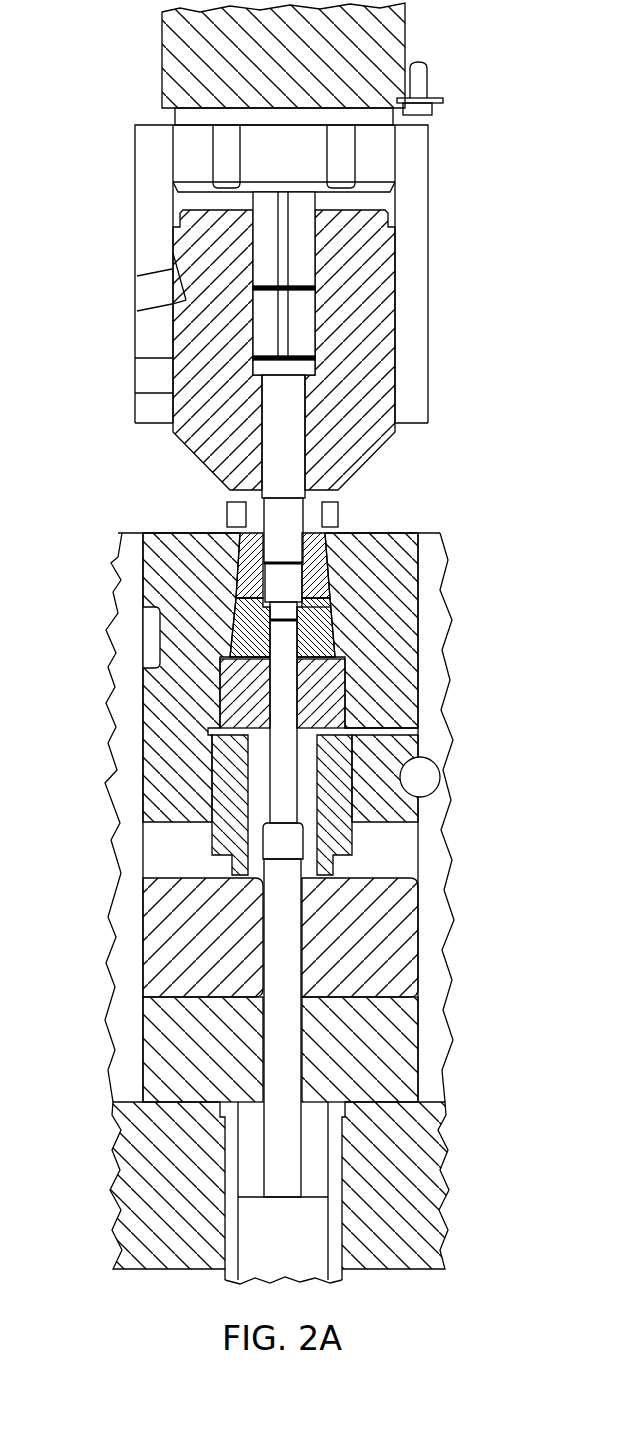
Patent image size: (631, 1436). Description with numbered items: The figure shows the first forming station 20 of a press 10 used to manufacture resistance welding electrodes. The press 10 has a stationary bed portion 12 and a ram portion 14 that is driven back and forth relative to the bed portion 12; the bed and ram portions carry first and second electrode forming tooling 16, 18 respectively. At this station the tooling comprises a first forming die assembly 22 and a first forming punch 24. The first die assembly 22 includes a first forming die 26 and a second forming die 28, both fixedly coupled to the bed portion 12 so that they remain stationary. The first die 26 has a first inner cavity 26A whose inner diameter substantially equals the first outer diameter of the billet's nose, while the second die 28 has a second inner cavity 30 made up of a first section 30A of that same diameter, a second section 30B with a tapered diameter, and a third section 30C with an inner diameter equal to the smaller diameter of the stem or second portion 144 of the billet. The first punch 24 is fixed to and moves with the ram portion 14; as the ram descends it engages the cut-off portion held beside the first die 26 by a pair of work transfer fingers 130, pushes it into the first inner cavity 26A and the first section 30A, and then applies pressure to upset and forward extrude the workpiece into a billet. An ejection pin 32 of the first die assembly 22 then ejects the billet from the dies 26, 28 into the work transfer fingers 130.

The press 10 is at (82, 464).
The bed portion 12 is at (133, 1203).
The ram portion 14 is at (150, 178).
The first electrode forming tooling 16 is at (365, 274).
The second electrode forming tooling 18 is at (362, 817).
The first forming station 20 is at (515, 455).
The first forming die assembly 22 is at (329, 817).
The first forming punch 24 is at (272, 443).
The first forming die 26 is at (240, 563).
The first inner cavity 26A is at (238, 582).
The second forming die 28 is at (245, 666).
The second inner cavity 30 is at (252, 627).
The first section 30A is at (305, 607).
The second section 30B is at (355, 618).
The third section 30C is at (307, 653).
The ejection pin 32 is at (253, 805).
The work transfer fingers 130 is at (227, 513).
The stem or second portion 144 is at (290, 630).